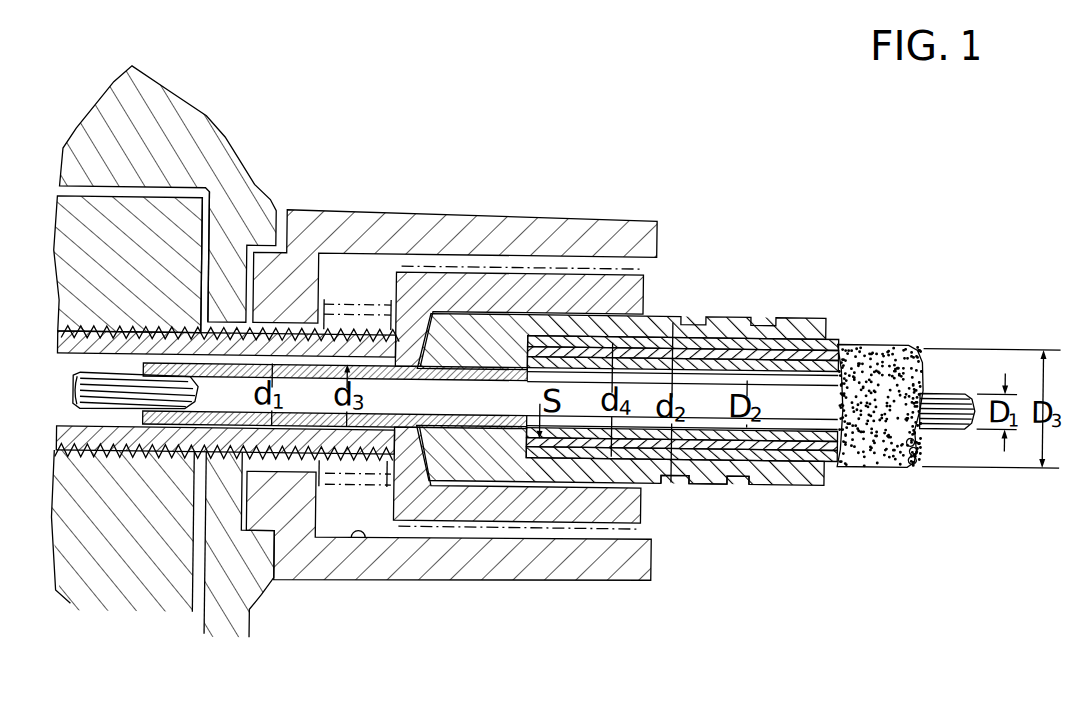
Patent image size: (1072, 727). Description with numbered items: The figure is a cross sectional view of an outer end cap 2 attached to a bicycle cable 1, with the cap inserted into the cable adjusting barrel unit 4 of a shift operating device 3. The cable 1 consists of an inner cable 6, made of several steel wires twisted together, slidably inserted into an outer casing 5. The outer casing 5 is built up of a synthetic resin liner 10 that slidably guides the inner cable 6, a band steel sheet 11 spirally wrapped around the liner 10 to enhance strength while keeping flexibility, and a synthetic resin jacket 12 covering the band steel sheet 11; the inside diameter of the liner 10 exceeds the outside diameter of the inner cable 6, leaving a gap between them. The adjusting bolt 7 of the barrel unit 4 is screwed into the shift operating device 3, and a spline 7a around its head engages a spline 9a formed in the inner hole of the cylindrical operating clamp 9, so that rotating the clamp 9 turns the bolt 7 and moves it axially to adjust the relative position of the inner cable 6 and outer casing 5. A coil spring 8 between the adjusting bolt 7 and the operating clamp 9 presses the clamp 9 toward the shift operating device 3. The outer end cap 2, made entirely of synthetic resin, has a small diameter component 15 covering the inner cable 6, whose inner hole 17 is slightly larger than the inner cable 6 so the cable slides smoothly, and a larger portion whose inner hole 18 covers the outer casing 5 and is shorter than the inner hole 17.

The bicycle cable 1 is at (904, 318).
The outer end cap 2 is at (809, 309).
The shift operating device 3 is at (203, 128).
The cable adjusting barrel unit 4 is at (600, 207).
The outer casing 5 is at (882, 459).
The inner cable 6 is at (947, 386).
The adjusting bolt 7 is at (580, 509).
The spline 7a is at (493, 523).
The coil spring 8 is at (368, 300).
The operating clamp 9 is at (486, 215).
The spline 9a is at (359, 534).
The liner 10 is at (713, 354).
The band steel sheet 11 is at (755, 343).
The jacket 12 is at (820, 336).
The small diameter component 15 is at (199, 308).
The inner hole 17 is at (183, 404).
The inner hole 18 is at (742, 477).